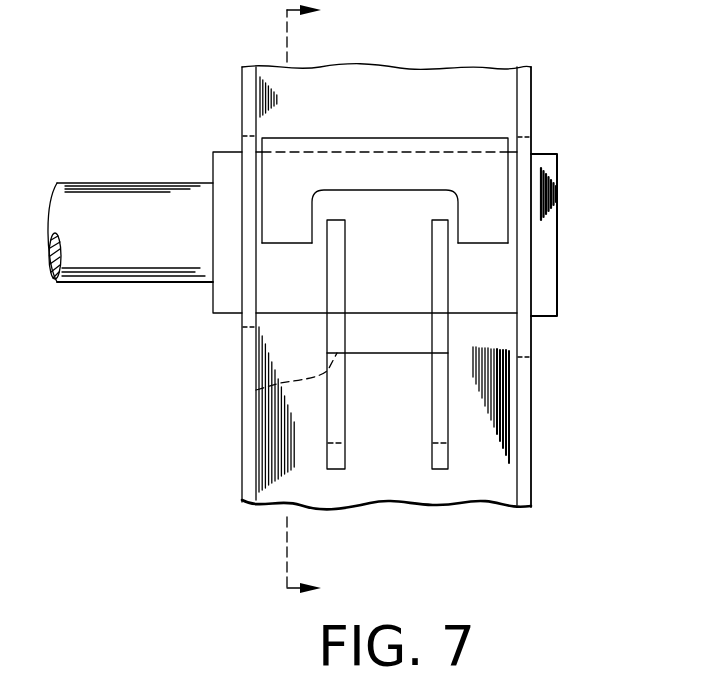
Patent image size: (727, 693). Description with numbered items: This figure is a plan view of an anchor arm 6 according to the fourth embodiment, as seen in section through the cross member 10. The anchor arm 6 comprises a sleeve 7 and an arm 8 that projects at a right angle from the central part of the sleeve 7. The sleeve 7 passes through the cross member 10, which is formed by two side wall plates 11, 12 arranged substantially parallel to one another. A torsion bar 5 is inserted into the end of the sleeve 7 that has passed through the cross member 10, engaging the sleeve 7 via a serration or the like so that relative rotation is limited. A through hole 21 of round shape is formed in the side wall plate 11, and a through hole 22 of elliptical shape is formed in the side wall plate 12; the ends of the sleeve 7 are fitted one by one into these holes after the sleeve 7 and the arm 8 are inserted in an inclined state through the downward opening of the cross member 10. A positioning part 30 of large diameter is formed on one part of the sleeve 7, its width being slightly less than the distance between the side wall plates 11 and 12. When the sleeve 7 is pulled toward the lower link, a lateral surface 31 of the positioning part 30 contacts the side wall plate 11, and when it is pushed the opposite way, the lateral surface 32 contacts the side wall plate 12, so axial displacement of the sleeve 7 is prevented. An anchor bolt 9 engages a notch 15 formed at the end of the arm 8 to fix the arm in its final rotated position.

The torsion bar 5 is at (95, 182).
The anchor arm 6 is at (462, 322).
The sleeve 7 is at (555, 200).
The arm 8 is at (337, 468).
The anchor bolt 9 is at (289, 305).
The cross member 10 is at (531, 478).
The side wall plate 11 is at (243, 80).
The side wall plate 12 is at (525, 92).
The notch 15 is at (241, 390).
The through hole 21 is at (250, 135).
The through hole 22 is at (520, 137).
The positioning part 30 is at (412, 138).
The lateral surface 31 is at (263, 226).
The lateral surface 32 is at (512, 233).